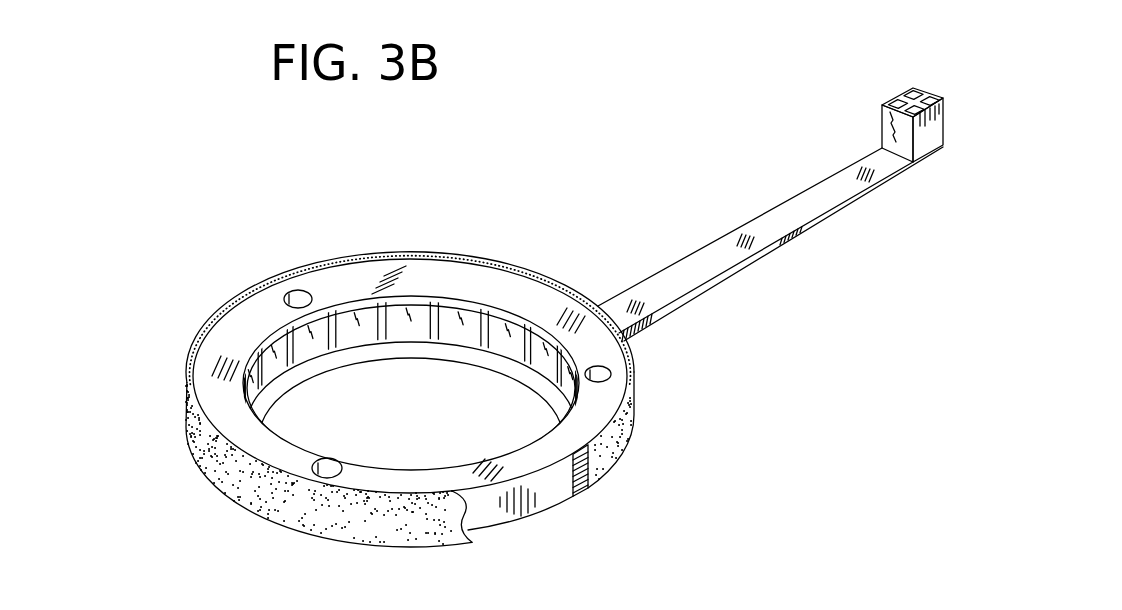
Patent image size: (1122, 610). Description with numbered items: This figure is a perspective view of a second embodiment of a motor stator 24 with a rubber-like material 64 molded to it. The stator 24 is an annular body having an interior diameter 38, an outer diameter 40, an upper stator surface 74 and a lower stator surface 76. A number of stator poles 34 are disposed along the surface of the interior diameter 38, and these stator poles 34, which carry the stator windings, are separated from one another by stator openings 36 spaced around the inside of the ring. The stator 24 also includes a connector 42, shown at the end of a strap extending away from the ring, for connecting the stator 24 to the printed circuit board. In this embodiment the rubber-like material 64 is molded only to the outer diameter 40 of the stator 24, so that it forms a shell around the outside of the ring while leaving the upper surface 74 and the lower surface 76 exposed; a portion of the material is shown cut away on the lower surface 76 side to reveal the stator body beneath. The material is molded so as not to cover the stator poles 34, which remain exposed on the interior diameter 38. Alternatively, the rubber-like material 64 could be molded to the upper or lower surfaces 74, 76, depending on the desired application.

The stator 24 is at (467, 240).
The stator poles 34 is at (462, 327).
The stator openings 36 is at (560, 365).
The interior diameter 38 is at (300, 370).
The outer diameter 40 is at (317, 264).
The connector 42 is at (881, 113).
The rubber-like material 64 is at (310, 512).
The upper stator surface 74 is at (247, 327).
The lower stator surface 76 is at (535, 524).